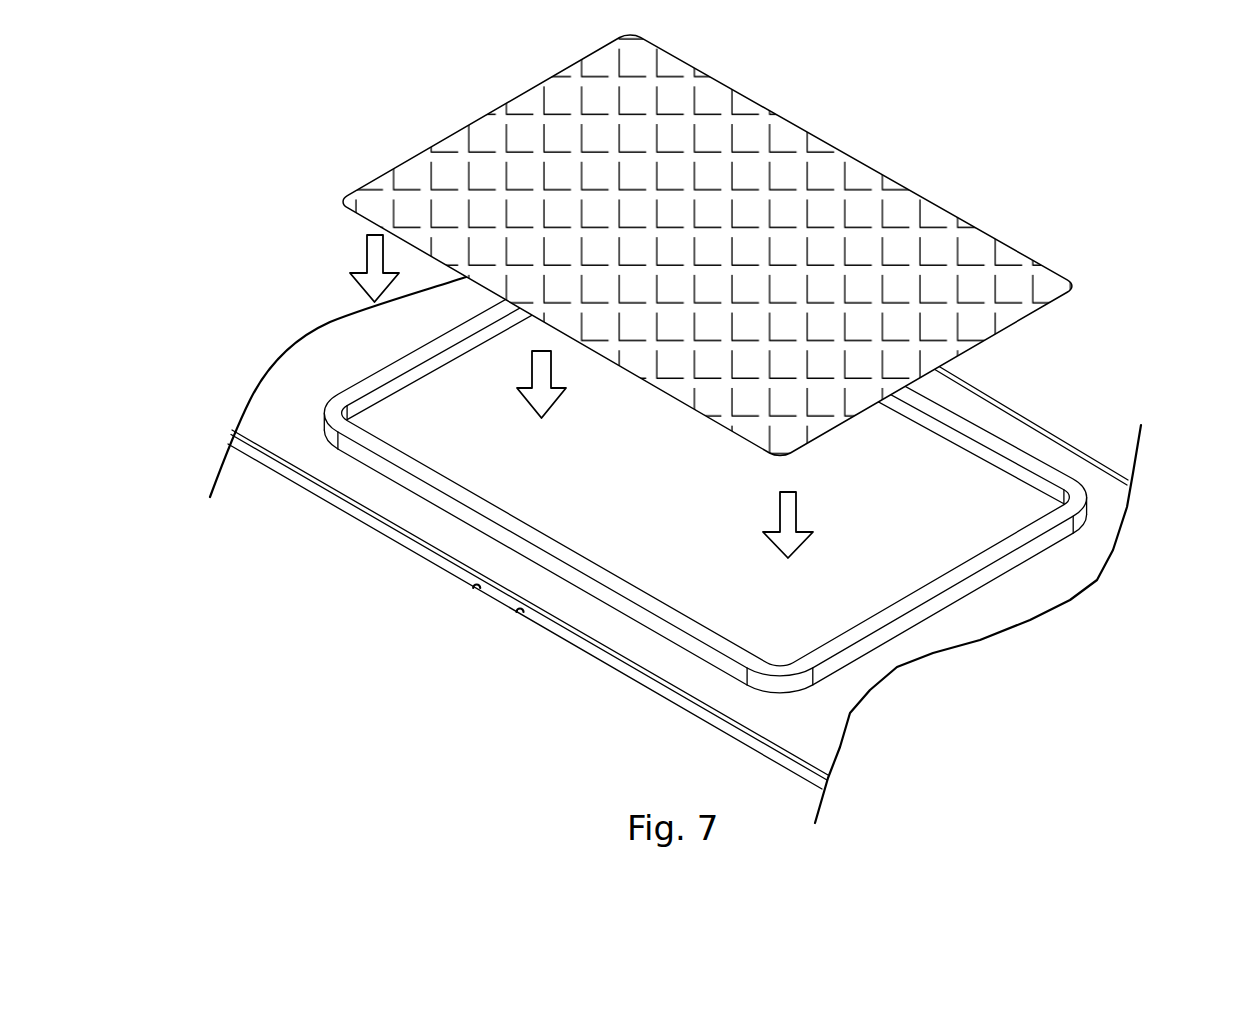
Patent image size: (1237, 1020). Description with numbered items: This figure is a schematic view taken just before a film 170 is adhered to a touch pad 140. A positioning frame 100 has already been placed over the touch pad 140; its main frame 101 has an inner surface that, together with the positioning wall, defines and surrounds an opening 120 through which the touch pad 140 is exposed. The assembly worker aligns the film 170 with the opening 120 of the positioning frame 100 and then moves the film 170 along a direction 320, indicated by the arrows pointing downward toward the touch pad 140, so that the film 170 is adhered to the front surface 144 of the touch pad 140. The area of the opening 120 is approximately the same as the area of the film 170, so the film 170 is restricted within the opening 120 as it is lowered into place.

The positioning frame 100 is at (360, 392).
The main frame 101 is at (630, 592).
The opening 120 is at (477, 465).
The touch pad 140 is at (967, 485).
The front surface 144 is at (935, 532).
The film 170 is at (920, 272).
The direction 320 is at (797, 513).